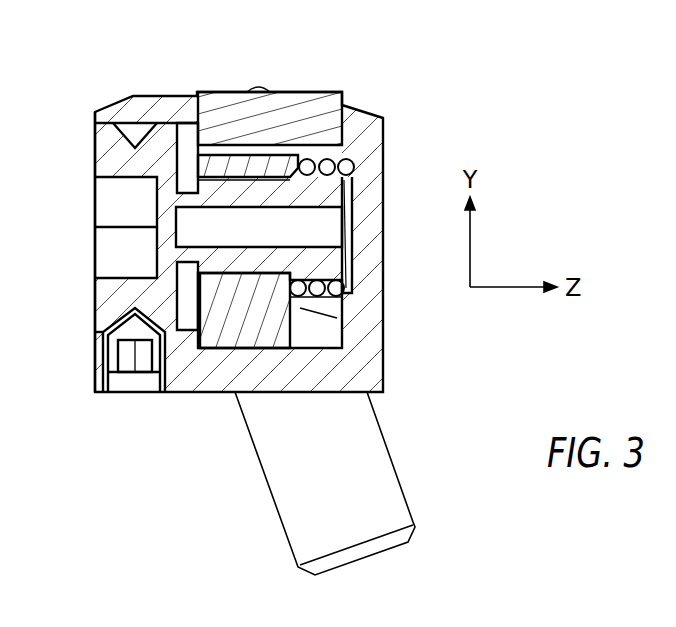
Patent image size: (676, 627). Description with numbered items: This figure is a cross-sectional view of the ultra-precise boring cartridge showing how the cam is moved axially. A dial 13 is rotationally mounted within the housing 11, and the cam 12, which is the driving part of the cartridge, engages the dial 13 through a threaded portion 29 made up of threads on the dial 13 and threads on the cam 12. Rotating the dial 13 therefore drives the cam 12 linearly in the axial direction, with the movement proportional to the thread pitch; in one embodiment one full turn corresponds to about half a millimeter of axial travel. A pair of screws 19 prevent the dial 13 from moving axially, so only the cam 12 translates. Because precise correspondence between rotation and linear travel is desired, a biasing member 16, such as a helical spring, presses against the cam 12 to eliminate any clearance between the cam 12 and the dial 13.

The housing 11 is at (386, 318).
The cam 12 is at (242, 153).
The dial 13 is at (94, 298).
The biasing member 16 is at (355, 167).
The screws 19 is at (127, 376).
The threaded portion 29 is at (242, 279).